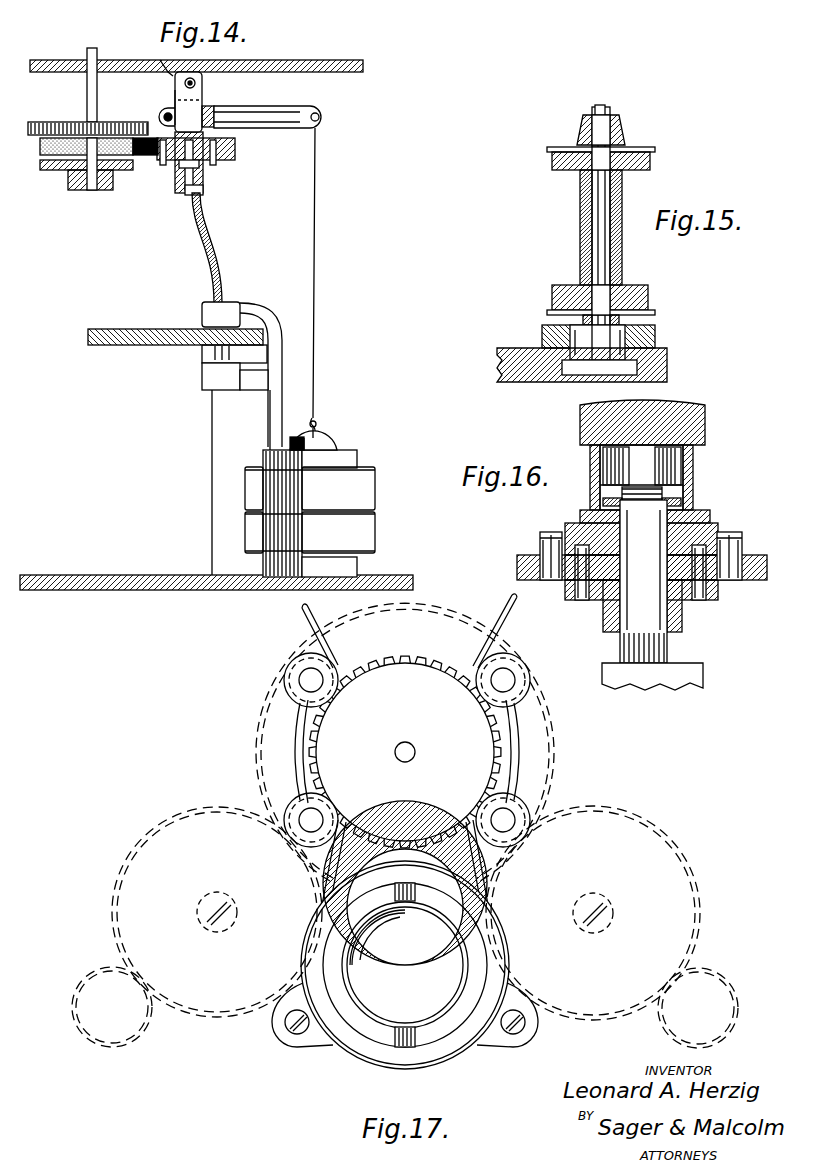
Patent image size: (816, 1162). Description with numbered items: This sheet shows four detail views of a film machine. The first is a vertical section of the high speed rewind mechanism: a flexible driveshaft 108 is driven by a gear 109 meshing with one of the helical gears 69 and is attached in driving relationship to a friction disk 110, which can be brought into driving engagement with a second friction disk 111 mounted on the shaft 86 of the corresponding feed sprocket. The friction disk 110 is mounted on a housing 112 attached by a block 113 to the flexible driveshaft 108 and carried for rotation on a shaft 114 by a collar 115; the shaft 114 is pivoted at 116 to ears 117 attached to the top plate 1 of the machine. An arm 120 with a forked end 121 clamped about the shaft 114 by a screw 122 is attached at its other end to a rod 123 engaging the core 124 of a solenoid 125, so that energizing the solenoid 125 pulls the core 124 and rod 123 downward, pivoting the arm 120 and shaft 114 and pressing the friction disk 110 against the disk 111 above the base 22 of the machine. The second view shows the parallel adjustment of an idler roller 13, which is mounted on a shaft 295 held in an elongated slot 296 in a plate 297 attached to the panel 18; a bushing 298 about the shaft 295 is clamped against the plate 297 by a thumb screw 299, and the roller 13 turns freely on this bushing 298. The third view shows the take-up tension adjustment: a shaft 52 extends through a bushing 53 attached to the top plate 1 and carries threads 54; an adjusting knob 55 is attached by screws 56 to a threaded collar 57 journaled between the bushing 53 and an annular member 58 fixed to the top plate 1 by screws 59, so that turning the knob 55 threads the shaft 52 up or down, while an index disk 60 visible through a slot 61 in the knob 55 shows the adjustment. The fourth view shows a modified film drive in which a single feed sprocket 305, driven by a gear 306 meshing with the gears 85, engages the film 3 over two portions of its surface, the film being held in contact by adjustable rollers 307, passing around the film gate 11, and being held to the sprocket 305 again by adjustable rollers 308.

In FIG. 14, the top plate 1 is at (350, 60).
In FIG. 16, the top plate 1 is at (517, 564).
In FIG. 17, the film 3 is at (300, 615).
In FIG. 17, the film gate 11 is at (348, 915).
In FIG. 15, the idler roller 13 is at (655, 157).
In FIG. 15, the panel 18 is at (516, 350).
In FIG. 14, the base plate 22 is at (100, 562).
In FIG. 16, the shaft 52 is at (650, 646).
In FIG. 16, the bushing 53 is at (685, 616).
In FIG. 16, the threads 54 is at (665, 498).
In FIG. 16, the adjusting knob 55 is at (665, 410).
In FIG. 16, the screws 56 is at (690, 512).
In FIG. 16, the threaded collar 57 is at (712, 525).
In FIG. 16, the annular member 58 is at (575, 526).
In FIG. 16, the screws 59 is at (545, 535).
In FIG. 16, the disk 60 is at (648, 485).
In FIG. 16, the slot 61 is at (590, 482).
In FIG. 14, the helical gear 69 is at (135, 347).
In FIG. 17, the gears 85 is at (118, 874).
In FIG. 14, the shaft 86 is at (98, 95).
In FIG. 14, the flexible driveshaft 108 is at (215, 248).
In FIG. 14, the gear 109 is at (187, 345).
In FIG. 14, the friction disk 110 is at (236, 148).
In FIG. 14, the friction disk 111 is at (72, 150).
In FIG. 14, the housing 112 is at (204, 172).
In FIG. 14, the block 113 is at (198, 196).
In FIG. 14, the shaft 114 is at (205, 110).
In FIG. 14, the collar 115 is at (173, 166).
In FIG. 14, the pivot 116 is at (197, 77).
In FIG. 14, the ears 117 is at (173, 74).
In FIG. 14, the arm 120 is at (289, 112).
In FIG. 14, the forked end 121 is at (171, 98).
In FIG. 14, the screw 122 is at (160, 115).
In FIG. 14, the rod 123 is at (318, 228).
In FIG. 14, the core 124 is at (330, 442).
In FIG. 14, the solenoid 125 is at (365, 490).
In FIG. 15, the shaft 295 is at (600, 201).
In FIG. 15, the elongated slot 296 is at (615, 346).
In FIG. 15, the plate 297 is at (655, 333).
In FIG. 15, the bushing 298 is at (613, 235).
In FIG. 15, the thumb screw 299 is at (620, 122).
In FIG. 17, the feed sprocket 305 is at (405, 752).
In FIG. 17, the gear 306 is at (263, 731).
In FIG. 17, the adjustable rollers 307 is at (298, 798).
In FIG. 17, the adjustable rollers 308 is at (508, 798).